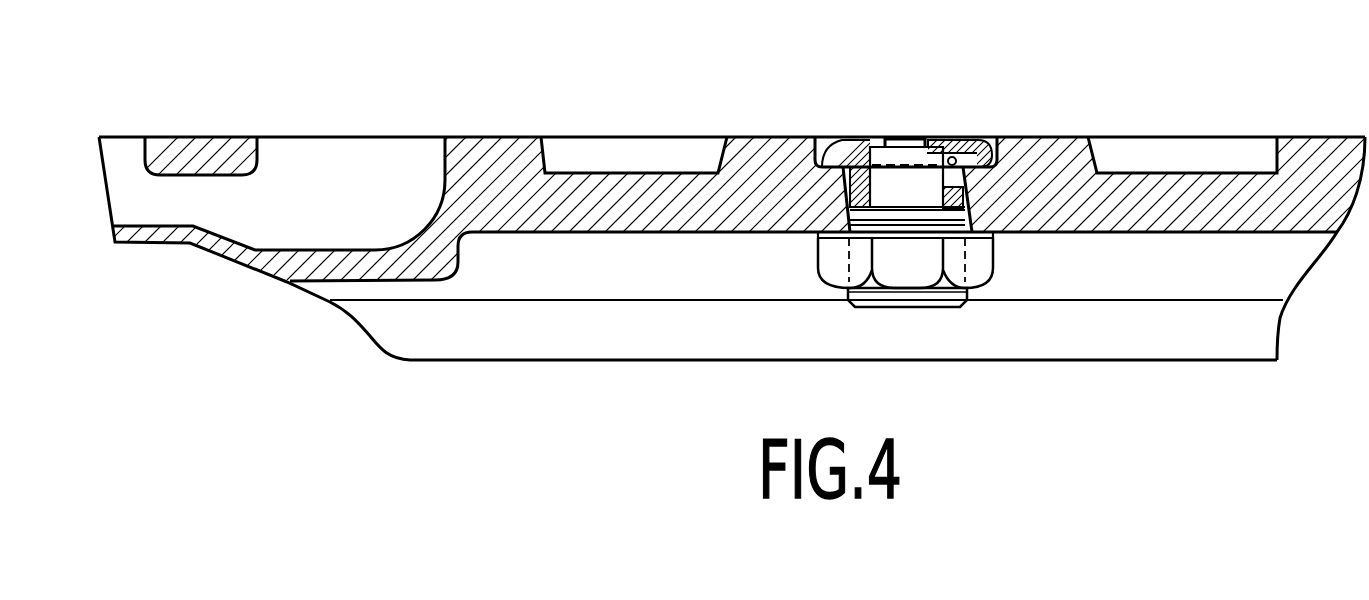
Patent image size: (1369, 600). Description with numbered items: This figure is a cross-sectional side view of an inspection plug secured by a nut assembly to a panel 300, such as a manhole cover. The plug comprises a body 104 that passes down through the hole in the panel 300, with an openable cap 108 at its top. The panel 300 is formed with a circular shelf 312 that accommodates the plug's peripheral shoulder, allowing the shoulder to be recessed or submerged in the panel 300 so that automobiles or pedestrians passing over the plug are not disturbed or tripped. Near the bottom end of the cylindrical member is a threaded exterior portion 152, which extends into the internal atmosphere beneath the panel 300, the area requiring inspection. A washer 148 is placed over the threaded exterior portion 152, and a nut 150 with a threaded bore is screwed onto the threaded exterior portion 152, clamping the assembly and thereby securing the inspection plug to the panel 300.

The panel 300 is at (1123, 200).
The body 104 is at (843, 172).
The circular shelf 312 is at (992, 160).
The openable cap 108 is at (903, 138).
The washer 148 is at (993, 234).
The nut 150 is at (993, 257).
The threaded exterior portion 152 is at (967, 294).